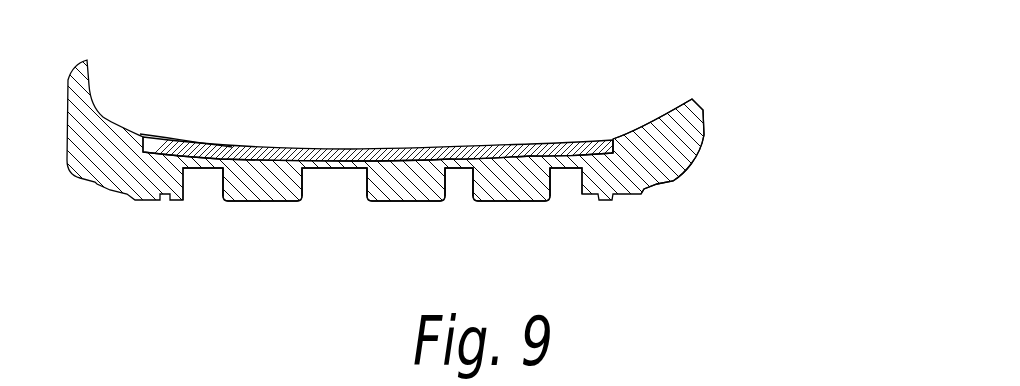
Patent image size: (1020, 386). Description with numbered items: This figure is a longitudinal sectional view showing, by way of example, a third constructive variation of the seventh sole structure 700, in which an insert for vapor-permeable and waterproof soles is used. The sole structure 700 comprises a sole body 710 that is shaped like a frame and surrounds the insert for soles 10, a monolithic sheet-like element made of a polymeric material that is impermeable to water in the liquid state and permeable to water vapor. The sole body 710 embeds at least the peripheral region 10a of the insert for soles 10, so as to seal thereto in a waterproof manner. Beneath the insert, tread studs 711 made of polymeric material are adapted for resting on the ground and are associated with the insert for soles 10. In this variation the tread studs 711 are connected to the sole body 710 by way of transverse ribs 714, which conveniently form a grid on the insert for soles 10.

The seventh sole structure 700 is at (100, 206).
The sole body 710 is at (720, 104).
The tread studs 711 is at (270, 188).
The transverse ribs 714 is at (200, 170).
The insert for soles 10 is at (340, 120).
The peripheral region 10a is at (602, 138).